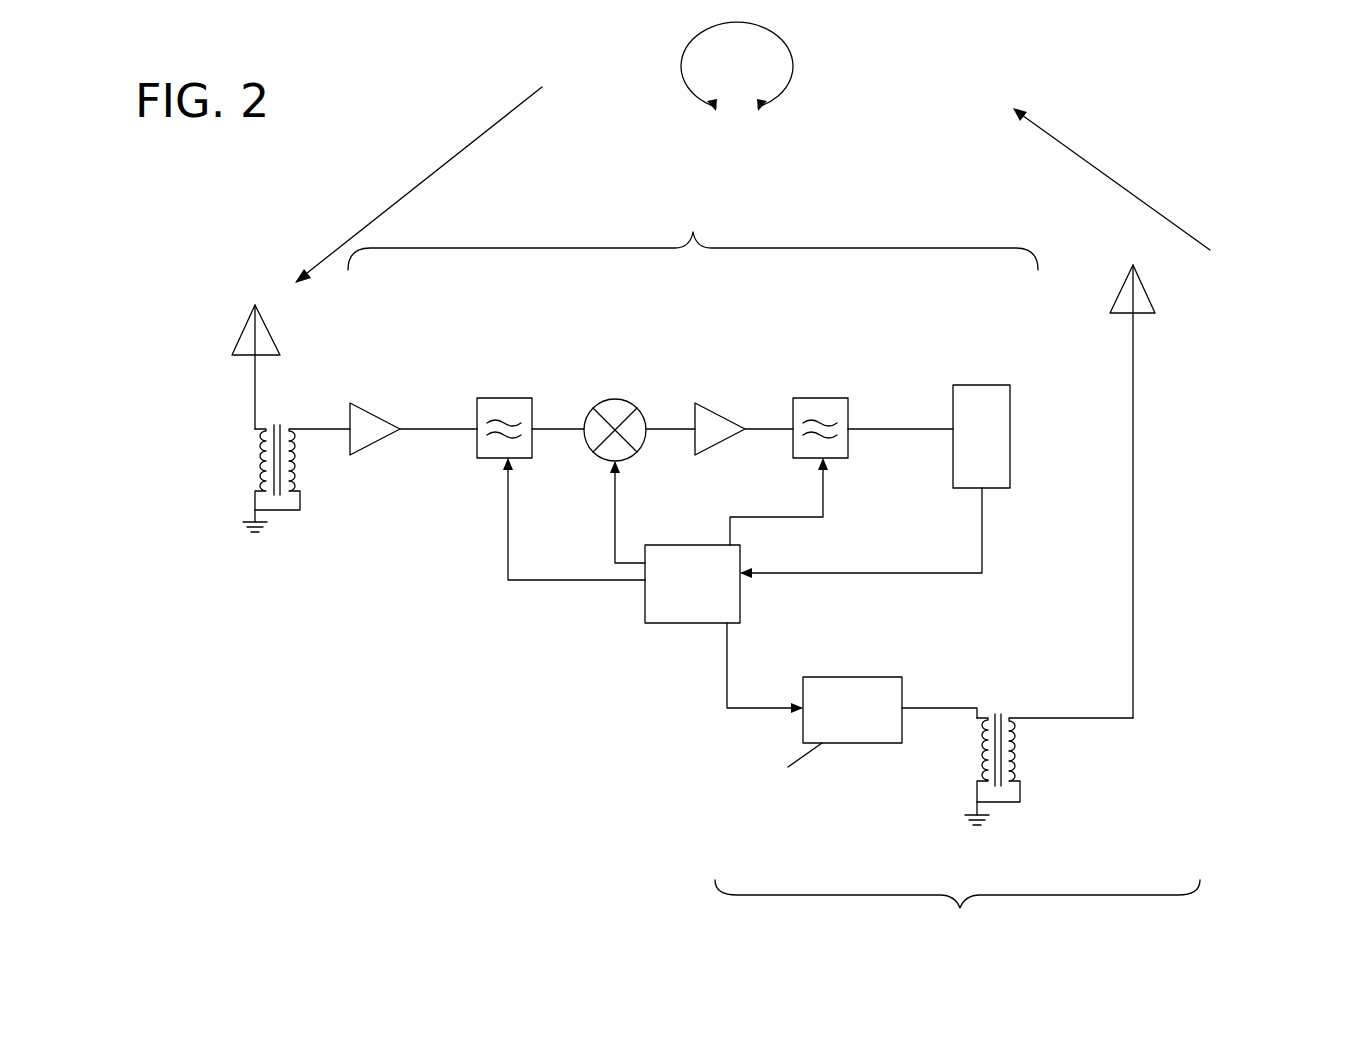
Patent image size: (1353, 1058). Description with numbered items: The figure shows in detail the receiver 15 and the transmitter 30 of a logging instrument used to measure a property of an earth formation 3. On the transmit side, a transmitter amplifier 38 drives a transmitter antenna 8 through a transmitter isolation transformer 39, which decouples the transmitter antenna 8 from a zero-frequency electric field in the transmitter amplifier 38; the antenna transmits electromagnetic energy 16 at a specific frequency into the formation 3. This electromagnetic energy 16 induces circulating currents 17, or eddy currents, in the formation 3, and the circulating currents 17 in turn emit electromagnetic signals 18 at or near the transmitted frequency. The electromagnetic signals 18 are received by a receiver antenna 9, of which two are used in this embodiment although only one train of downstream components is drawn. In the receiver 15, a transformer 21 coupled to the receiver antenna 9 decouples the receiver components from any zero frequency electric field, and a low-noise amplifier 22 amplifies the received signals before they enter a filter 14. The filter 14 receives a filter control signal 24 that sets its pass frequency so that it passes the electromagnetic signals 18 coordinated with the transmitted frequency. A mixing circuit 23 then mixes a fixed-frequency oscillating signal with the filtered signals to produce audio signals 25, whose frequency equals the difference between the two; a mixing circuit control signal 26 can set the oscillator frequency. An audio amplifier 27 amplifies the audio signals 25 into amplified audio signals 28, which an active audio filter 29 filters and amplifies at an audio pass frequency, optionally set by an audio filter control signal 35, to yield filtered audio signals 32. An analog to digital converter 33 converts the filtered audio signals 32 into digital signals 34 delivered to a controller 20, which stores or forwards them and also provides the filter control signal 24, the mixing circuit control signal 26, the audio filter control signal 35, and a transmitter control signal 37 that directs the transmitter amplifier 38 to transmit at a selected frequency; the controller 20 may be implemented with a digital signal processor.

The formation 3 is at (724, 161).
The transmitter antenna 8 is at (1147, 295).
The receiver antenna 9 is at (243, 330).
The filter 14 is at (492, 458).
The receiver 15 is at (693, 234).
The electromagnetic energy 16 is at (1110, 177).
The circulating currents 17 is at (792, 68).
The electromagnetic signals 18 is at (450, 158).
The controller 20 is at (692, 608).
The transformer 21 is at (300, 490).
The low-noise amplifier 22 is at (370, 442).
The mixing circuit 23 is at (607, 398).
The filter control signal 24 is at (603, 580).
The audio signals 25 is at (660, 429).
The mixing circuit control signal 26 is at (615, 498).
The audio amplifier 27 is at (718, 407).
The amplified audio signals 28 is at (773, 429).
The active audio filter 29 is at (822, 398).
The transmitter 30 is at (957, 913).
The filtered audio signals 32 is at (885, 429).
The analog to digital converter 33 is at (981, 416).
The digital signals 34 is at (982, 517).
The audio filter control signal 35 is at (823, 487).
The transmitter control signal 37 is at (723, 690).
The transmitter amplifier 38 is at (837, 771).
The transmitter isolation transformer 39 is at (1020, 780).